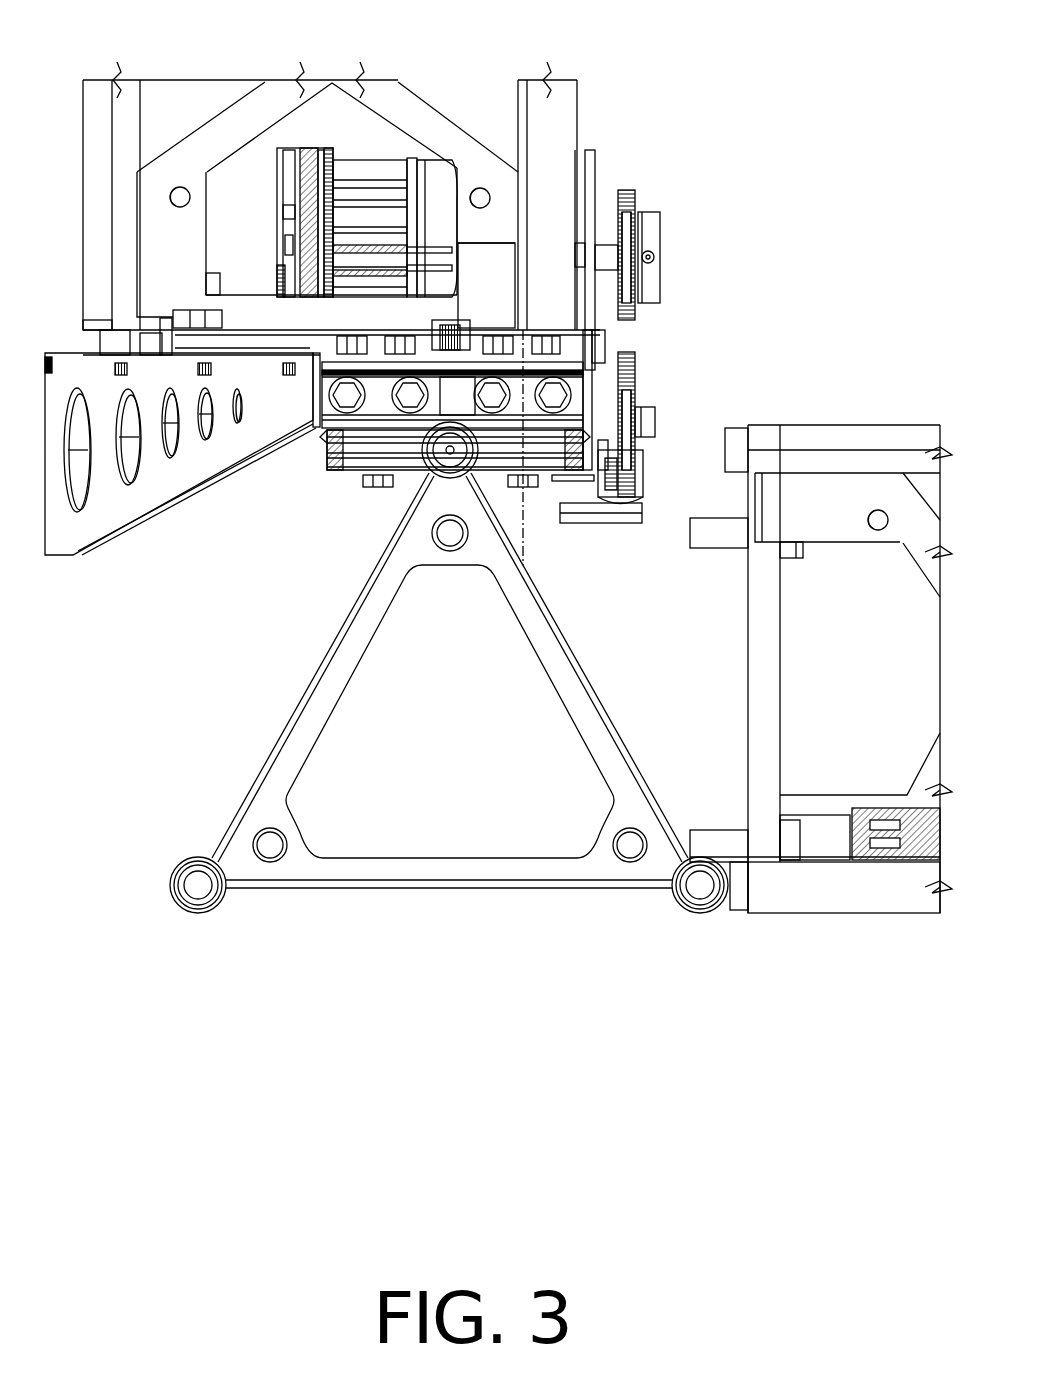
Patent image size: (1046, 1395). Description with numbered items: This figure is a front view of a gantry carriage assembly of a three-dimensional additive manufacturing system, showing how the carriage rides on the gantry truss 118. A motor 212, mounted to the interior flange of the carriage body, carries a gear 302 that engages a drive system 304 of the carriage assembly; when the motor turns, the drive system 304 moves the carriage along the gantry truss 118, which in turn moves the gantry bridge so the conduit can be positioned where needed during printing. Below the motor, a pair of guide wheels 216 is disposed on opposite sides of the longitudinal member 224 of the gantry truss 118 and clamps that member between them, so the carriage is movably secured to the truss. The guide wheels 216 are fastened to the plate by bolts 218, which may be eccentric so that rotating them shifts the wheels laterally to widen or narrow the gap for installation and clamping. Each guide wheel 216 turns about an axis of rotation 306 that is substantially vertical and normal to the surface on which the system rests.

The gantry truss 118 is at (473, 887).
The motor 212 is at (387, 193).
The pair of guide wheels 216 is at (430, 328).
The bolts 218 is at (378, 483).
The longitudinal member 224 is at (463, 477).
The gear 302 is at (632, 195).
The drive system 304 is at (635, 363).
The axis of rotation 306 is at (523, 507).